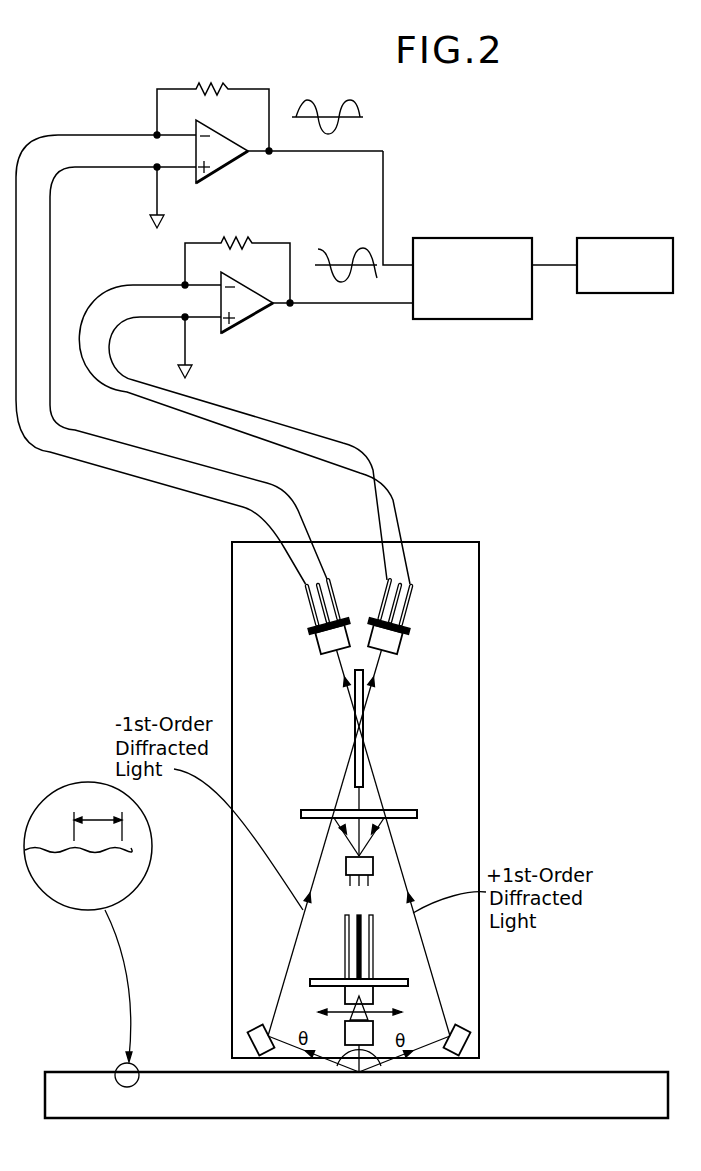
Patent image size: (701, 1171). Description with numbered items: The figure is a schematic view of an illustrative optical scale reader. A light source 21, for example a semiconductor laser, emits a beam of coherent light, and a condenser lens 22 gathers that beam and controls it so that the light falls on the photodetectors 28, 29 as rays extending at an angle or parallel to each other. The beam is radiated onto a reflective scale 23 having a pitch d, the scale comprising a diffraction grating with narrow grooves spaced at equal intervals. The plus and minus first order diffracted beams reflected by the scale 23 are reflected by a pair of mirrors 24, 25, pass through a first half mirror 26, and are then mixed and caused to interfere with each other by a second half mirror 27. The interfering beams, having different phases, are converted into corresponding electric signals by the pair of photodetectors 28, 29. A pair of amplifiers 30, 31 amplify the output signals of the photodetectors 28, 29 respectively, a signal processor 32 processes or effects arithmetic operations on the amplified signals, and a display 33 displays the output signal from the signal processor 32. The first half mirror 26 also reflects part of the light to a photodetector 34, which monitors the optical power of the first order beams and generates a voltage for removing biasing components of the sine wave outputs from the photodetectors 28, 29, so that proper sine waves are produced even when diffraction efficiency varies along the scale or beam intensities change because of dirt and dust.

The light source 21 is at (318, 979).
The condenser lens 22 is at (370, 1033).
The reflective scale 23 is at (555, 1085).
The mirror 24 is at (457, 1028).
The mirror 25 is at (262, 1027).
The first half mirror 26 is at (308, 808).
The second half mirror 27 is at (367, 731).
The photodetector 28 is at (322, 638).
The photodetector 29 is at (398, 643).
The amplifier 30 is at (213, 84).
The amplifier 31 is at (253, 325).
The signal processor 32 is at (458, 248).
The display 33 is at (617, 248).
The photodetector 34 is at (372, 867).